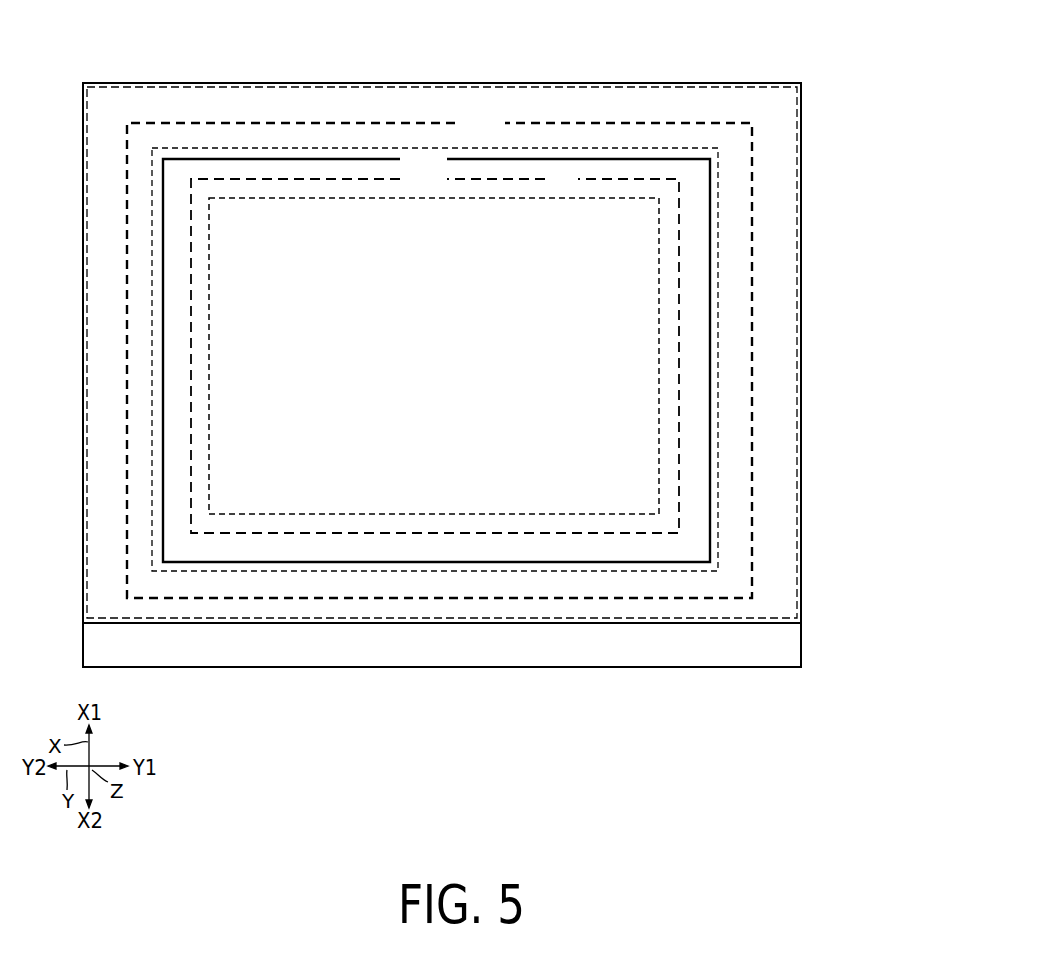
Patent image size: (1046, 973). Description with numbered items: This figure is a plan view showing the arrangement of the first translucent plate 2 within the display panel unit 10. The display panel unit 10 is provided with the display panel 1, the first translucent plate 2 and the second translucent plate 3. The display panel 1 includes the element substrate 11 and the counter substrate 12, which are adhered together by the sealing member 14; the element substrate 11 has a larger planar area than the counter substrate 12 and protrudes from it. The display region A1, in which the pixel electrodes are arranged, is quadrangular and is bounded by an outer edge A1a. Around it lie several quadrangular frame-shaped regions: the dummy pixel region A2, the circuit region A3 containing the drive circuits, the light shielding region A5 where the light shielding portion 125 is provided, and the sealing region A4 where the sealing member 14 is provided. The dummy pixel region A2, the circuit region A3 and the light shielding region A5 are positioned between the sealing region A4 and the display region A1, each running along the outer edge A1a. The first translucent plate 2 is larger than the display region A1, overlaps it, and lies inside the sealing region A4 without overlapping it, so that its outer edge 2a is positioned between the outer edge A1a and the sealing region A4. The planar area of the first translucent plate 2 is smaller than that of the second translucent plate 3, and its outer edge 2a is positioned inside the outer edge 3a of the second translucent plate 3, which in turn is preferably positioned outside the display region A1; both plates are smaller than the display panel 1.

The display panel unit 10 is at (496, 358).
The display panel 1 is at (496, 391).
The element substrate 11 is at (757, 669).
The counter substrate 12 is at (757, 625).
The sealing member 14 is at (800, 121).
The second translucent plate 3 is at (755, 215).
The outer edge of the second translucent plate 3a is at (752, 270).
The first translucent plate 2 is at (715, 420).
The outer edge of the first translucent plate 2a is at (713, 465).
The light shielding portion 125 is at (718, 529).
The outer edge of the display region A1a is at (660, 346).
The display region A1 is at (479, 514).
The dummy pixel region A2 is at (479, 179).
The circuit region A3 is at (479, 148).
The sealing region A4 is at (479, 87).
The light shielding region A5 is at (562, 150).